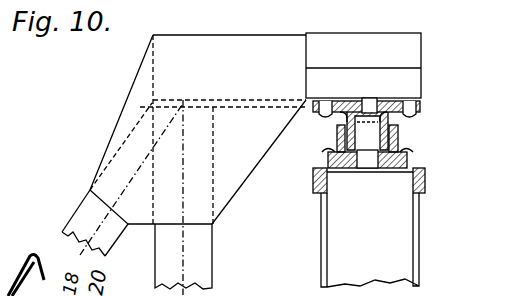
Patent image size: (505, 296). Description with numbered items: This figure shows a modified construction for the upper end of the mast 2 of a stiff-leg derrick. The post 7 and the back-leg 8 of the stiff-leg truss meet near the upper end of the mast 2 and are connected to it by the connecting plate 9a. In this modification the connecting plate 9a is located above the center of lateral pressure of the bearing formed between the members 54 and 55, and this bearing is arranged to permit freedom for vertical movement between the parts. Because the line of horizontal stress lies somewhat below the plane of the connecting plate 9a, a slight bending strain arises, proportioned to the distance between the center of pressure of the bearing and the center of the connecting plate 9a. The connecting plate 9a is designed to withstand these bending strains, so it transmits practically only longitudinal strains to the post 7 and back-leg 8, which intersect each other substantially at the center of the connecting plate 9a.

The mast 2 is at (369, 218).
The post 7 is at (207, 255).
The back-leg 8 is at (76, 206).
The connecting plate 9a is at (392, 99).
The bearing member 54 is at (420, 116).
The bearing member 55 is at (420, 138).